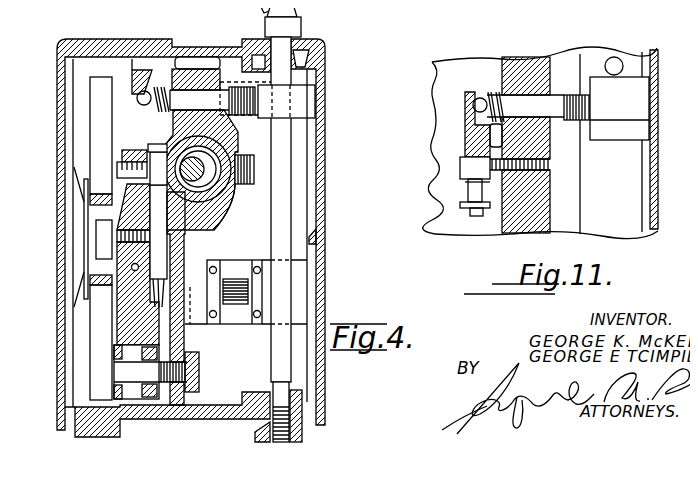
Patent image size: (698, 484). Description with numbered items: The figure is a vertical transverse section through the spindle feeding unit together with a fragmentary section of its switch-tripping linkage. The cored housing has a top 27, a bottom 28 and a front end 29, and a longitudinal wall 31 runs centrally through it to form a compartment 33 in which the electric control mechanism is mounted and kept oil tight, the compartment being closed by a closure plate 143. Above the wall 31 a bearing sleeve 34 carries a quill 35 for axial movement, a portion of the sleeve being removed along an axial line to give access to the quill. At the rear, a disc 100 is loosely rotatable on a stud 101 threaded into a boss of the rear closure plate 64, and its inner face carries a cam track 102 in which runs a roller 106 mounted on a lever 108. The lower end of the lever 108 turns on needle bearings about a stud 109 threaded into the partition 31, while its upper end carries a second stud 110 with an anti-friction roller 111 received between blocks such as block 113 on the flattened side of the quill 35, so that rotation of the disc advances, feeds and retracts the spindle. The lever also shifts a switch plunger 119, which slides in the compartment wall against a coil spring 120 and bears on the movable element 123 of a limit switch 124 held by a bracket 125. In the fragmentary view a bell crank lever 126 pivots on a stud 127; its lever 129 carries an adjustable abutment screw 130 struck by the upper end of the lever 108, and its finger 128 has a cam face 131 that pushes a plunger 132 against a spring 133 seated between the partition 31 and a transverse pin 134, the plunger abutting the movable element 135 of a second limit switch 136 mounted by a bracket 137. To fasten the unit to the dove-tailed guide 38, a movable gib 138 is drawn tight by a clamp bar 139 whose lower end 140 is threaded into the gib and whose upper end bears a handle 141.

In FIG. 4, the top 27 is at (153, 54).
In FIG. 4, the bottom 28 is at (172, 418).
In FIG. 4, the front end 29 is at (233, 213).
In FIG. 4, the wall 31 is at (183, 246).
In FIG. 11, the wall 31 is at (540, 202).
In FIG. 4, the compartment 33 is at (298, 207).
In FIG. 4, the bearing sleeve 34 is at (232, 203).
In FIG. 4, the quill 35 is at (238, 150).
In FIG. 4, the dove-tailed guide 38 is at (194, 179).
In FIG. 4, the rear closure plate 64 is at (57, 220).
In FIG. 4, the disc 100 is at (93, 98).
In FIG. 4, the stud 101 is at (145, 238).
In FIG. 4, the cam track 102 is at (97, 213).
In FIG. 4, the roller 106 is at (100, 248).
In FIG. 4, the lever 108 is at (135, 308).
In FIG. 4, the stud 109 is at (203, 365).
In FIG. 4, the second stud 110 is at (115, 158).
In FIG. 4, the anti-friction roller 111 is at (162, 142).
In FIG. 4, the block 113 is at (162, 184).
In FIG. 4, the switch plunger 119 is at (185, 308).
In FIG. 4, the coil spring 120 is at (207, 260).
In FIG. 4, the movable element 123 is at (228, 303).
In FIG. 4, the limit switch 124 is at (262, 258).
In FIG. 4, the bracket 125 is at (239, 323).
In FIG. 11, the bell crank lever 126 is at (472, 178).
In FIG. 11, the stud 127 is at (548, 167).
In FIG. 4, the finger 128 is at (129, 71).
In FIG. 11, the finger 128 is at (463, 142).
In FIG. 11, the lever 129 is at (463, 200).
In FIG. 11, the adjustable abutment screw 130 is at (478, 213).
In FIG. 4, the cam face 131 is at (142, 65).
In FIG. 4, the plunger 132 is at (217, 48).
In FIG. 11, the plunger 132 is at (540, 113).
In FIG. 4, the spring 133 is at (152, 112).
In FIG. 11, the spring 133 is at (488, 90).
In FIG. 4, the pin 134 is at (138, 102).
In FIG. 11, the pin 134 is at (476, 111).
In FIG. 4, the movable element 135 is at (237, 84).
In FIG. 11, the movable element 135 is at (565, 93).
In FIG. 4, the limit switch 136 is at (305, 92).
In FIG. 11, the limit switch 136 is at (636, 100).
In FIG. 4, the bracket 137 is at (238, 116).
In FIG. 4, the movable gib 138 is at (255, 433).
In FIG. 4, the clamp bar 139 is at (282, 190).
In FIG. 4, the lower end 140 is at (283, 443).
In FIG. 4, the handle 141 is at (290, 25).
In FIG. 4, the closure plate 143 is at (320, 232).